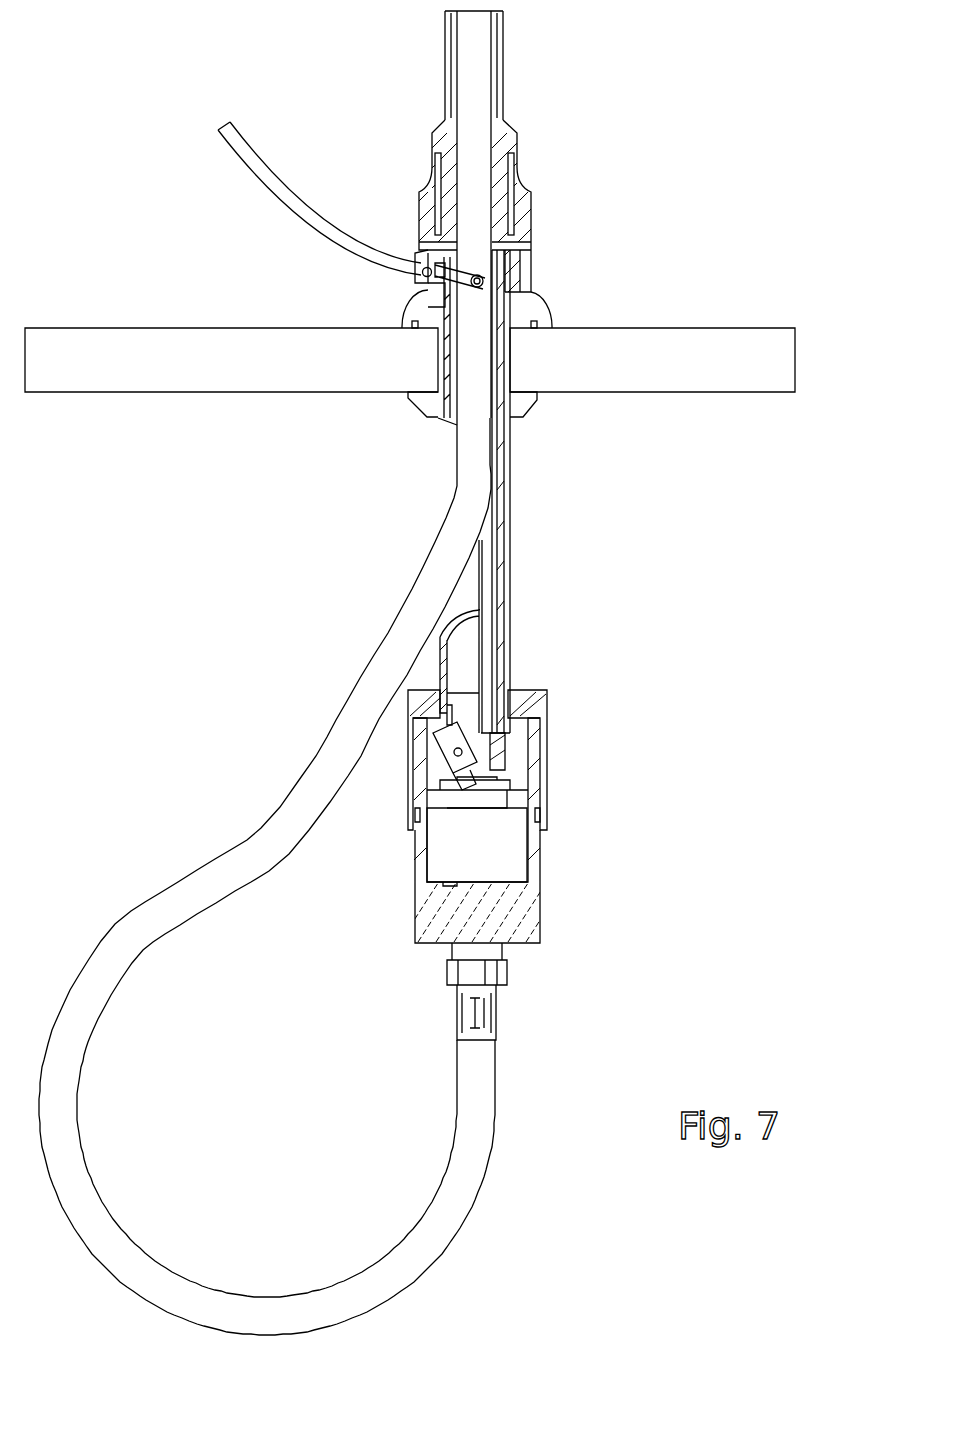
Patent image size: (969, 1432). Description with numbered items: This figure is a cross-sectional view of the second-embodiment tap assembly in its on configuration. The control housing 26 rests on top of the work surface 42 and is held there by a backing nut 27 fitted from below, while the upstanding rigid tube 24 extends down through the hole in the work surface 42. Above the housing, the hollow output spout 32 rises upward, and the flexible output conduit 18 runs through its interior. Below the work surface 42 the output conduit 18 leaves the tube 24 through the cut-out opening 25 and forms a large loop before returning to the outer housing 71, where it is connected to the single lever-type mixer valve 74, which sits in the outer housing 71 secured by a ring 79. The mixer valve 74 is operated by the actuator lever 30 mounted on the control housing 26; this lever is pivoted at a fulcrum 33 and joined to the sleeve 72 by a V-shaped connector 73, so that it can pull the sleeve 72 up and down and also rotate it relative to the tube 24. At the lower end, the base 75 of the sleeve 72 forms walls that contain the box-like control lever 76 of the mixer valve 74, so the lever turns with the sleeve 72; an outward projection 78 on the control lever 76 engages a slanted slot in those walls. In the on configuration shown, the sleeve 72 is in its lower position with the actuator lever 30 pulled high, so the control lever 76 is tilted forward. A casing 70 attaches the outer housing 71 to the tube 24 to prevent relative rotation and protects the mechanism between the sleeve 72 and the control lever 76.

The output conduit 18 is at (79, 1187).
The upstanding rigid tube 24 is at (510, 620).
The cut-out opening 25 is at (448, 434).
The control housing 26 is at (532, 310).
The backing nut 27 is at (523, 412).
The actuator lever 30 is at (255, 176).
The output spout 32 is at (503, 82).
The fulcrum 33 is at (420, 278).
The work surface 42 is at (707, 377).
The casing 70 is at (547, 720).
The outer housing 71 is at (523, 917).
The sleeve 72 is at (504, 520).
The V-shaped connector 73 is at (466, 268).
The mixer valve 74 is at (517, 853).
The base of the sleeve 75 is at (505, 742).
The control lever 76 is at (432, 742).
The outward projection 78 is at (456, 757).
The ring 79 is at (522, 798).